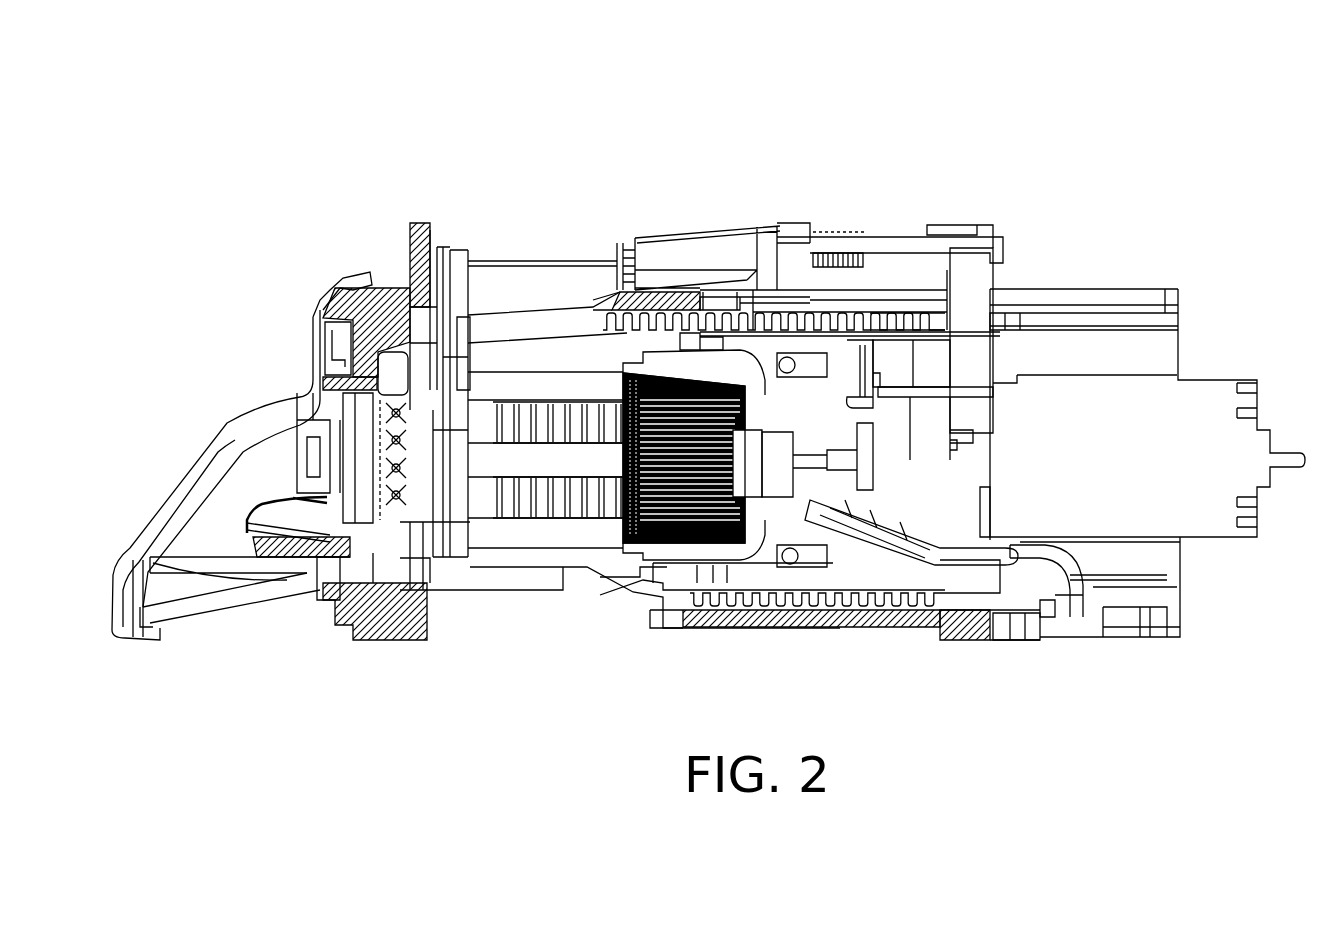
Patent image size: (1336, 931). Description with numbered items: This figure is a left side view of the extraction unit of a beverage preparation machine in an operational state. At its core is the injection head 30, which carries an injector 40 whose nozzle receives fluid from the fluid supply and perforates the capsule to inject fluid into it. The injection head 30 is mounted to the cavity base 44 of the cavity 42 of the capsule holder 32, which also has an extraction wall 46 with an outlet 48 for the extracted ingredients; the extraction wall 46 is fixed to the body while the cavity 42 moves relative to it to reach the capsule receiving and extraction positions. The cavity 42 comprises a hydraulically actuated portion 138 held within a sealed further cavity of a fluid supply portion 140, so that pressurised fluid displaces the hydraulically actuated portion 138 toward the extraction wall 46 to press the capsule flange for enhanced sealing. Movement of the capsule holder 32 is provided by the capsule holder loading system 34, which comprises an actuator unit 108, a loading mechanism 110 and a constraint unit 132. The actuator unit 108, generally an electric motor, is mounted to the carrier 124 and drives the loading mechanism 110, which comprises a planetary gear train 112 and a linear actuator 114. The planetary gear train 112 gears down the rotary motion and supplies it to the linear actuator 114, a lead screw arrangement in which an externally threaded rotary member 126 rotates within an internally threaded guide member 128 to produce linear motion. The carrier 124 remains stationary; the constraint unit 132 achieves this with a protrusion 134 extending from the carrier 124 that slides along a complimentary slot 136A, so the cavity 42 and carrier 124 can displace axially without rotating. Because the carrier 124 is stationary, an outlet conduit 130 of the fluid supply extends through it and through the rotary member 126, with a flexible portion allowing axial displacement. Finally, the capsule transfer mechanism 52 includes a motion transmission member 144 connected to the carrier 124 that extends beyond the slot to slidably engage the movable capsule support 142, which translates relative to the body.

The injection head 30 is at (767, 500).
The capsule holder 32 is at (770, 185).
The capsule holder loading system 34 is at (1305, 714).
The injector 40 is at (743, 500).
The cavity 42 is at (613, 535).
The cavity base 44 is at (684, 458).
The extraction wall 46 is at (387, 547).
The outlet 48 is at (125, 652).
The capsule transfer mechanism 52 is at (302, 218).
The actuator unit 108 is at (1151, 473).
The loading mechanism 110 is at (955, 678).
The planetary gear train 112 is at (958, 641).
The linear actuator 114 is at (1043, 281).
The carrier 124 is at (893, 413).
The rotary member 126 is at (927, 320).
The guide member 128 is at (897, 313).
The outlet conduit 130 is at (997, 560).
The constraint unit 132 is at (1010, 135).
The protrusion 134 is at (983, 303).
The complimentary slot 136A is at (1190, 80).
The hydraulically actuated portion 138 is at (737, 367).
The fluid supply portion 140 is at (833, 340).
The movable capsule support 142 is at (668, 250).
The motion transmission member 144 is at (973, 260).